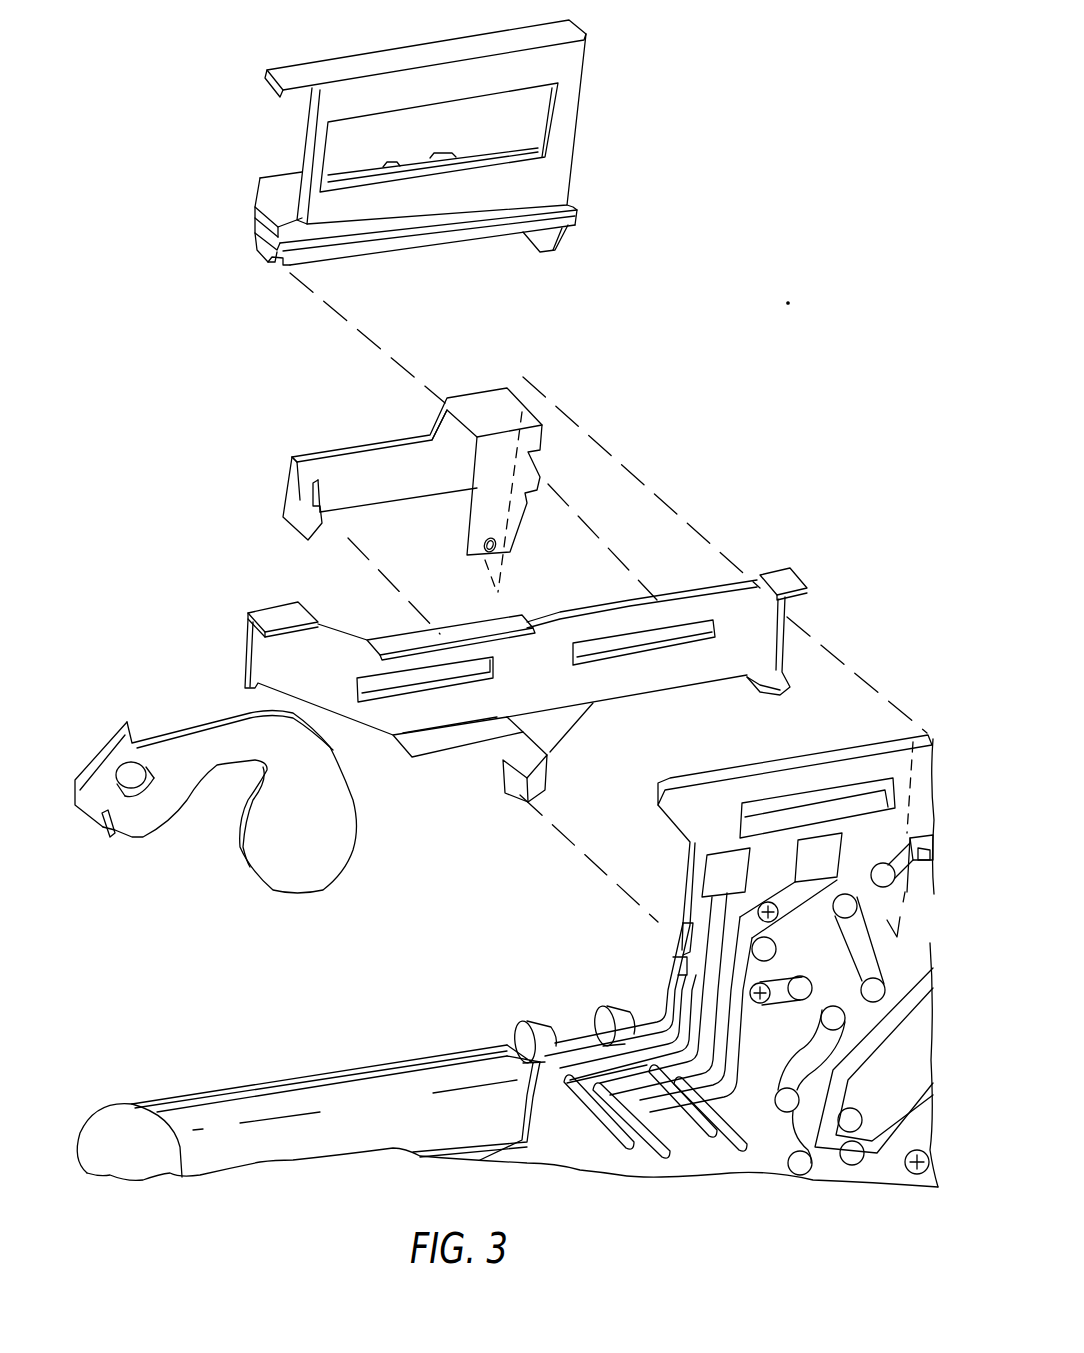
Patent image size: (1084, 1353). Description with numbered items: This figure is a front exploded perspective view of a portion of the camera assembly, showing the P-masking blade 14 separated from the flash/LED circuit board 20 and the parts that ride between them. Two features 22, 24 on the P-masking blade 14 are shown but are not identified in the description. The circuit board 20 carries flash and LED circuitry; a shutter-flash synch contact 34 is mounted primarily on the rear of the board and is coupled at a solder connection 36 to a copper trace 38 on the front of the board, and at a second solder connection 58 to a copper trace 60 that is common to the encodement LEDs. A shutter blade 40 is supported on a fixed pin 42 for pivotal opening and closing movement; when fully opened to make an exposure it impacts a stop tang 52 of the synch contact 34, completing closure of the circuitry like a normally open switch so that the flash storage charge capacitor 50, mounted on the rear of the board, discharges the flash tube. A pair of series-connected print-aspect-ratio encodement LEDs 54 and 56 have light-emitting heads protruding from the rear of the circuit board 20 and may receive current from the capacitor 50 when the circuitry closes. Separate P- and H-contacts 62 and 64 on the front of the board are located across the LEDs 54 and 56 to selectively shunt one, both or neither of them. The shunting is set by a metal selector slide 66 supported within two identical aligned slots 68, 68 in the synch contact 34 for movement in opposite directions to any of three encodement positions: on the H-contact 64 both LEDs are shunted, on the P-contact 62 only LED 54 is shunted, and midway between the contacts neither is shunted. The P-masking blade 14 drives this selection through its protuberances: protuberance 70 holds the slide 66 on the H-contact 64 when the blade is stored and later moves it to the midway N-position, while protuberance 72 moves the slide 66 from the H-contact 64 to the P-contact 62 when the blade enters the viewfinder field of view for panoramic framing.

The P-masking blade 14 is at (357, 62).
The flash/LED circuit board 20 is at (740, 1180).
The window opening 22 is at (447, 102).
The ledge 24 is at (343, 108).
The shutter-flash synch contact 34 is at (618, 690).
The solder connection 36 is at (909, 921).
The copper trace 38 is at (905, 860).
The shutter blade 40 is at (315, 872).
The fixed pin 42 is at (125, 773).
The flash storage charge capacitor 50 is at (287, 1097).
The stop tang 52 is at (275, 610).
The LED 54 is at (510, 1040).
The LED 56 is at (600, 1012).
The solder connection 58 is at (681, 946).
The copper trace 60 is at (690, 988).
The P-contact 62 is at (720, 873).
The H-contact 64 is at (820, 843).
The metal selector slide 66 is at (363, 457).
The aligned slots 68 is at (403, 688).
The protuberance 70 is at (263, 262).
The protuberance 72 is at (560, 245).